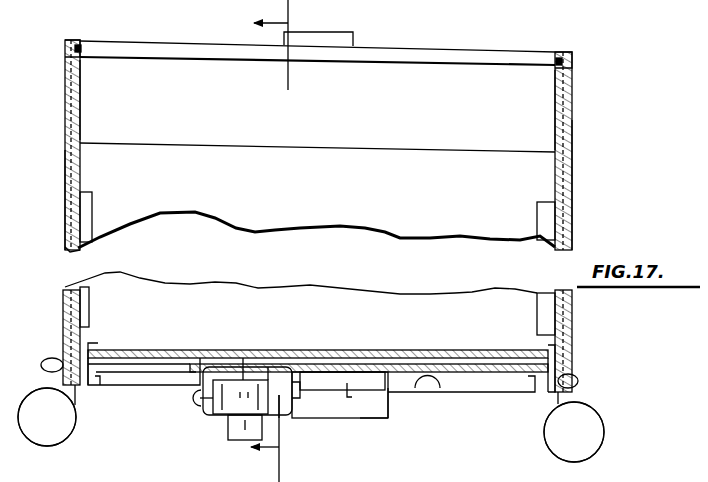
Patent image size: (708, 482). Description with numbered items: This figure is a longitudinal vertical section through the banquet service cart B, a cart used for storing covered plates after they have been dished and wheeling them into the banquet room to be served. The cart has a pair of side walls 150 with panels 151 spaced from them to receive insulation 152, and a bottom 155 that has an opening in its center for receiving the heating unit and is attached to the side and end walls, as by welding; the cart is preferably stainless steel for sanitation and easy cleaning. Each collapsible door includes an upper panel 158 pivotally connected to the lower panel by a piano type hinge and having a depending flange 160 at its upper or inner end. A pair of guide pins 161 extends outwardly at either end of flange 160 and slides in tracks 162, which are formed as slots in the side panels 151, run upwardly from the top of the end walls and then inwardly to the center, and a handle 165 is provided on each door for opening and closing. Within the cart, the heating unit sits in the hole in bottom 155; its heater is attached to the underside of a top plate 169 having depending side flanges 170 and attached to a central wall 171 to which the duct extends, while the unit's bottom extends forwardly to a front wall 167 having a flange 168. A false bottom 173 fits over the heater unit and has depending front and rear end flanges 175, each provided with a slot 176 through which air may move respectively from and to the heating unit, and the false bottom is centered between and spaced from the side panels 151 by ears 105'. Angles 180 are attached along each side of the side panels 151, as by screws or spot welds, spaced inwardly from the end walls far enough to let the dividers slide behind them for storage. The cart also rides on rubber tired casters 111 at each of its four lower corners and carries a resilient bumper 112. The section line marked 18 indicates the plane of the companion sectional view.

The side wall 150 is at (67, 108).
The panel 151 is at (79, 117).
The insulation 152 is at (66, 170).
The guide pin 161 is at (75, 56).
The track 162 is at (77, 44).
The upper panel 158 is at (202, 26).
The depending flange 160 is at (212, 60).
The handle 165 is at (337, 36).
The section line 18- 18 is at (283, 241).
The angle 180 is at (88, 208).
The banquet service cart B is at (574, 194).
The false bottom 173 is at (362, 352).
The depending side flange 170 is at (510, 363).
The top plate 169 is at (272, 364).
The bottom 155 is at (112, 386).
The depending end flange 175 is at (93, 350).
The slot 176 is at (96, 378).
The resilient bumper 112 is at (45, 366).
The ear 105' is at (311, 423).
The rubber tired caster 111 is at (35, 439).
The central wall 171 is at (298, 421).
The front wall 167 is at (392, 400).
The flange 168 is at (437, 386).